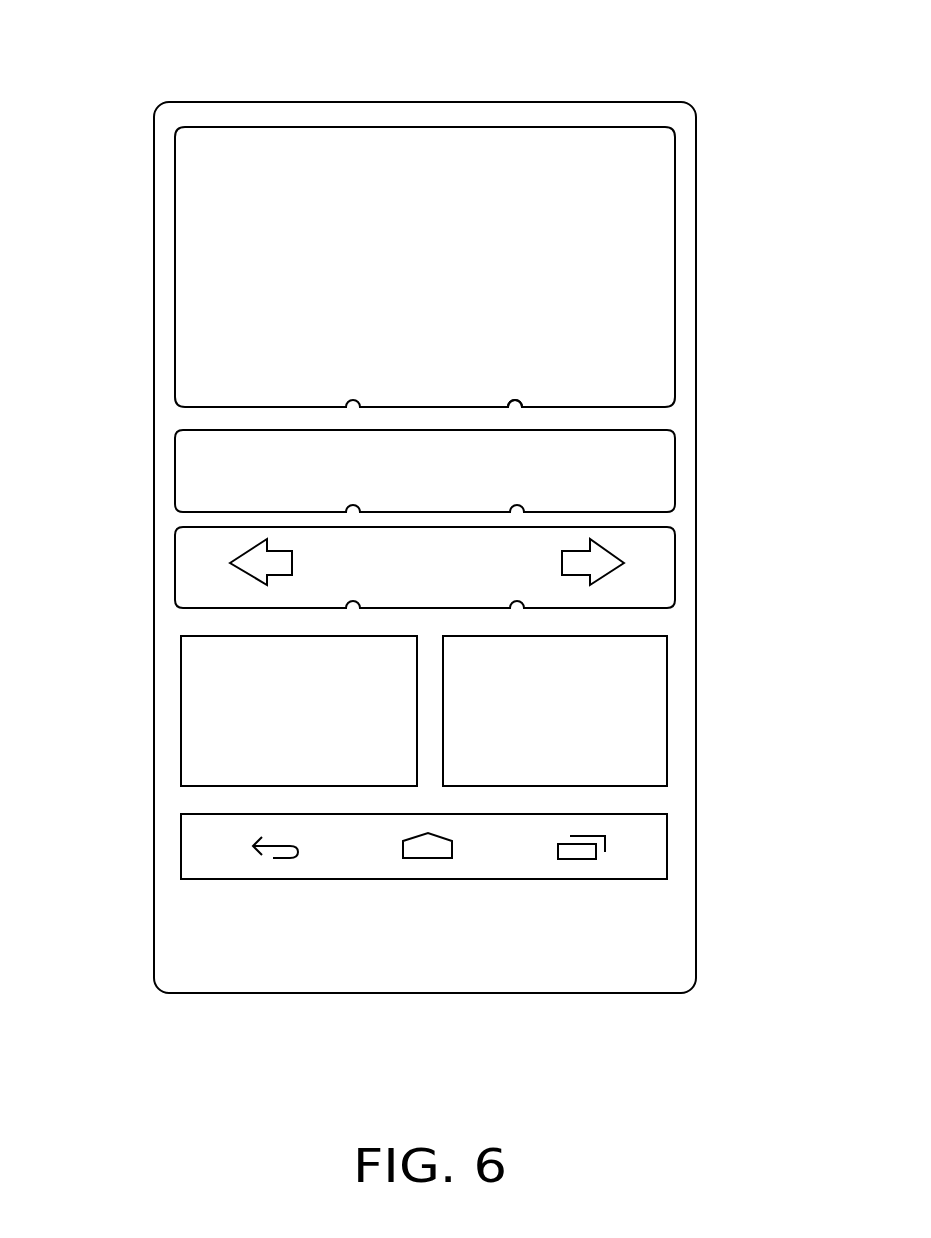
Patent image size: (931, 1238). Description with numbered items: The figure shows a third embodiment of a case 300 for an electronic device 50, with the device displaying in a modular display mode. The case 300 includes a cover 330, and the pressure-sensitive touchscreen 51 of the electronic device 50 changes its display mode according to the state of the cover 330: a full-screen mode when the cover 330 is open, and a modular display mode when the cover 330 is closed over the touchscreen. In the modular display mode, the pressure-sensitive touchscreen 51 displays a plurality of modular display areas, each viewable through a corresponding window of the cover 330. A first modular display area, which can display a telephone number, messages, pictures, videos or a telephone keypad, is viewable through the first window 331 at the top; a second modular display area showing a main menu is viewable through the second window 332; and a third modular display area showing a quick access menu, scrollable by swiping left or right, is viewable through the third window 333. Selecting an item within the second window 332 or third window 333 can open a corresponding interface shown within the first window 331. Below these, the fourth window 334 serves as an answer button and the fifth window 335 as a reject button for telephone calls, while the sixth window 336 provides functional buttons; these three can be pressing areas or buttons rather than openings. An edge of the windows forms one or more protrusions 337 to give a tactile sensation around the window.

The electronic device 50 is at (441, 52).
The pressure-sensitive touchscreen 51 is at (383, 148).
The case 300 is at (167, 132).
The cover 330 is at (188, 423).
The first window 331 is at (650, 228).
The second window 332 is at (639, 480).
The third window 333 is at (643, 581).
The fourth window 334 is at (202, 717).
The fifth window 335 is at (627, 717).
The sixth window 336 is at (643, 852).
The protrusion 337 is at (519, 403).